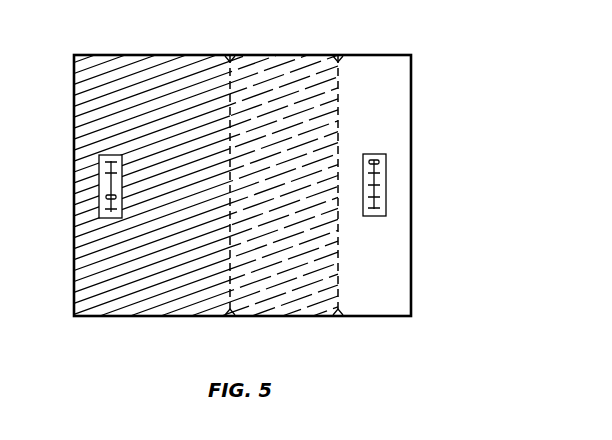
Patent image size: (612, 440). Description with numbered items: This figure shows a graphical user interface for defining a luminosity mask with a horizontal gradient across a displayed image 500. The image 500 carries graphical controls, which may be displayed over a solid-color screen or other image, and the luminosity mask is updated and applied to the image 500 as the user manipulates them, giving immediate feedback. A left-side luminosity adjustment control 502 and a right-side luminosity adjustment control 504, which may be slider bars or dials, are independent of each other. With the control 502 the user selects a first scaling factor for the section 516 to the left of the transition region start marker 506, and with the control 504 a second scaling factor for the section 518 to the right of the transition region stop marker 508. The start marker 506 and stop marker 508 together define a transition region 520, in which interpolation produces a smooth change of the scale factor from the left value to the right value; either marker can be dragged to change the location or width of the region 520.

The displayed image 500 is at (460, 78).
The left-side luminosity adjustment control 502 is at (99, 190).
The right-side luminosity adjustment control 504 is at (386, 190).
The transition region start marker 506 is at (230, 55).
The transition region stop marker 508 is at (338, 55).
The section of the display to the left of the transition region start marker 516 is at (230, 319).
The section of the display to the right of the transition region stop marker 518 is at (411, 319).
The transition region 520 is at (338, 319).